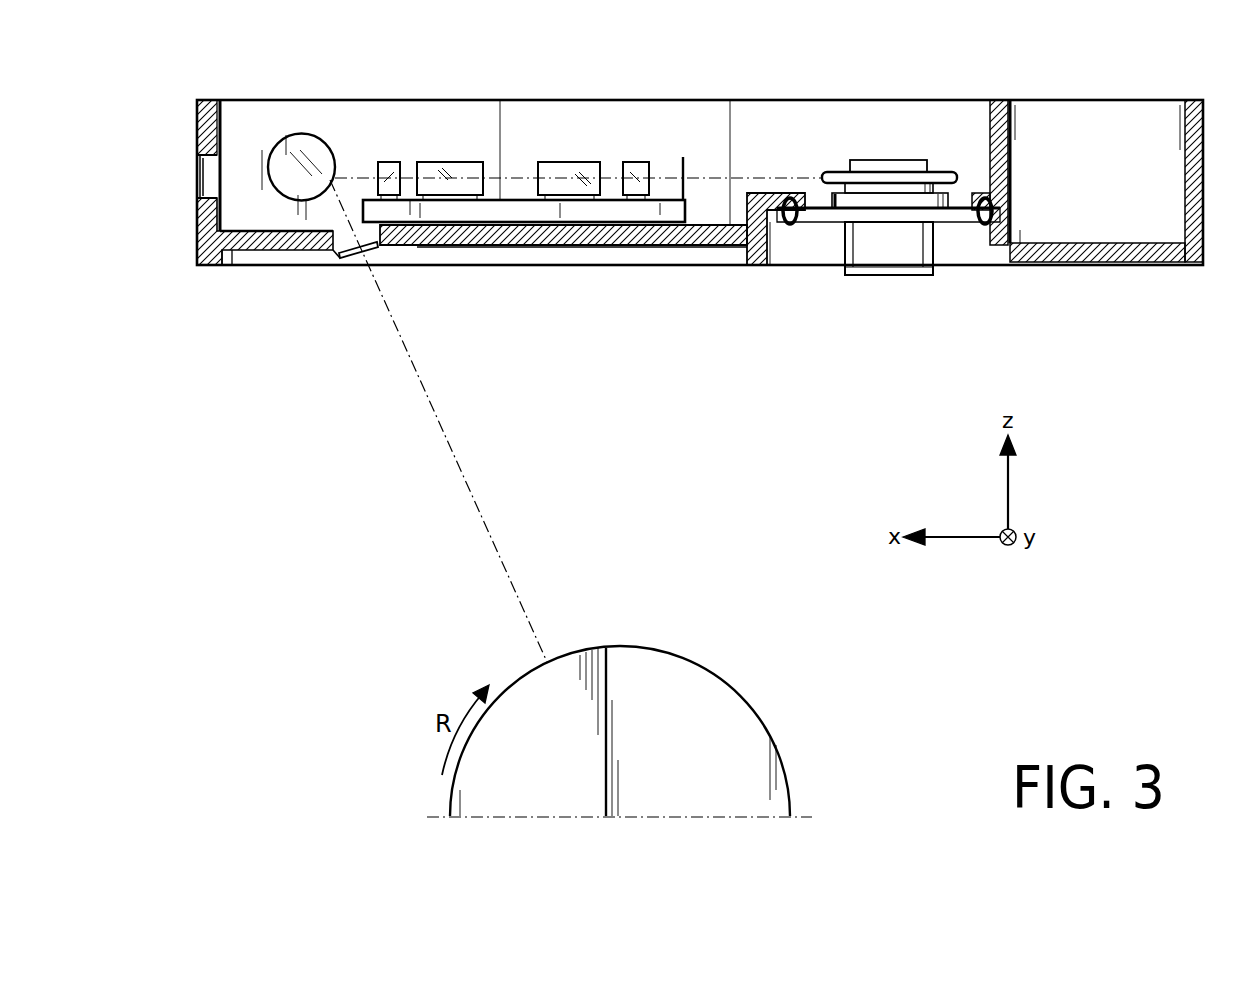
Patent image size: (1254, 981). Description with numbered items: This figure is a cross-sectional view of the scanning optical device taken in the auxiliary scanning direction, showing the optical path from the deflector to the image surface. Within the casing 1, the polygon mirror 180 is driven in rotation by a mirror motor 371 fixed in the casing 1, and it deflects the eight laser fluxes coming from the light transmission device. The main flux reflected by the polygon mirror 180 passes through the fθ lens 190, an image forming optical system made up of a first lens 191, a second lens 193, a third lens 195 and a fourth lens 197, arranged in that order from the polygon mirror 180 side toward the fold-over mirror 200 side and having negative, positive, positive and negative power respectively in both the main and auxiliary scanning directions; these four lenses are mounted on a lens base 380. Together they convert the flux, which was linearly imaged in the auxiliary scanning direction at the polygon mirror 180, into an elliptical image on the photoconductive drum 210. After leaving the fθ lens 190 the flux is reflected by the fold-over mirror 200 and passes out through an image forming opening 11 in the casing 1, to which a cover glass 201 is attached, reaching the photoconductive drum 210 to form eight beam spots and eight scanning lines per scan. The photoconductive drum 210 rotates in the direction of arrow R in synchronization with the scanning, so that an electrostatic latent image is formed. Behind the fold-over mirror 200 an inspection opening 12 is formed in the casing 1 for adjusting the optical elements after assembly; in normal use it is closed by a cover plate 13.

The casing 1 is at (1203, 187).
The image forming opening 11 is at (336, 254).
The inspection opening 12 is at (197, 167).
The cover plate 13 is at (197, 200).
The polygon mirror 180 is at (901, 170).
The fθ lens 190 is at (657, 53).
The first lens 191 is at (635, 160).
The second lens 193 is at (560, 160).
The third lens 195 is at (456, 160).
The fourth lens 197 is at (391, 160).
The fold-over mirror 200 is at (318, 130).
The cover glass 201 is at (352, 265).
The photoconductive drum 210 is at (762, 680).
The mirror motor 371 is at (889, 255).
The lens base 380 is at (557, 212).